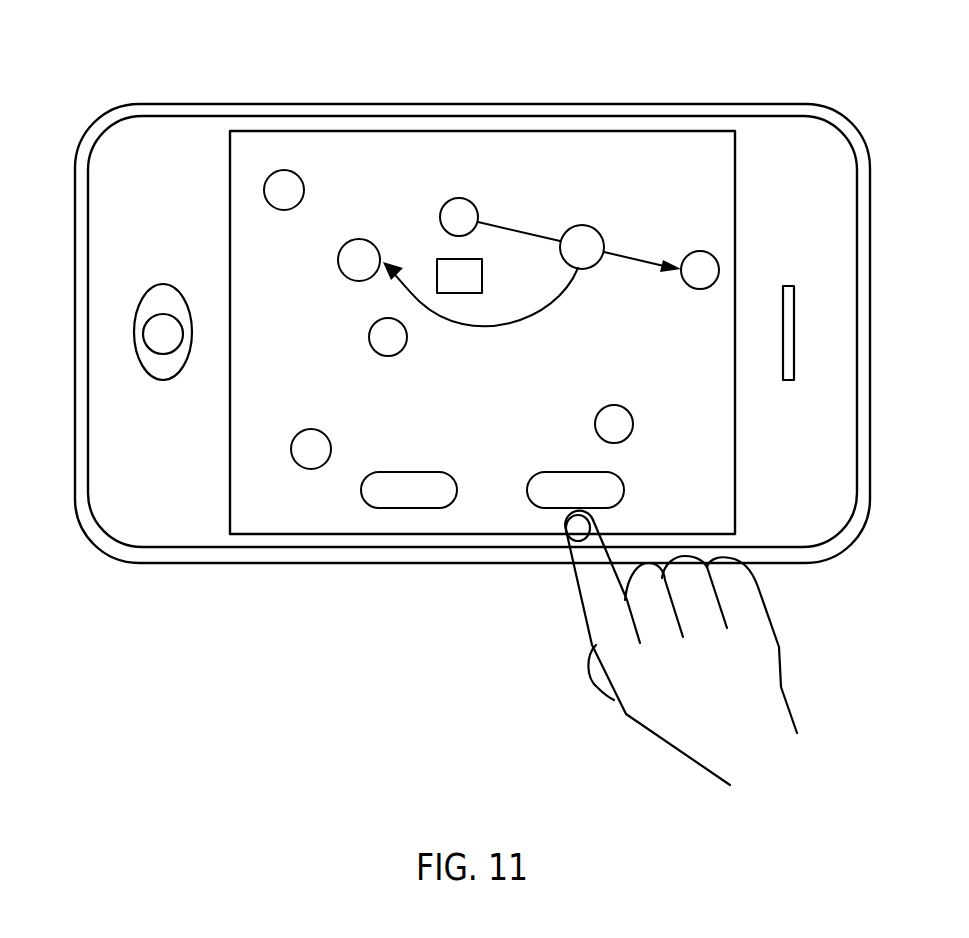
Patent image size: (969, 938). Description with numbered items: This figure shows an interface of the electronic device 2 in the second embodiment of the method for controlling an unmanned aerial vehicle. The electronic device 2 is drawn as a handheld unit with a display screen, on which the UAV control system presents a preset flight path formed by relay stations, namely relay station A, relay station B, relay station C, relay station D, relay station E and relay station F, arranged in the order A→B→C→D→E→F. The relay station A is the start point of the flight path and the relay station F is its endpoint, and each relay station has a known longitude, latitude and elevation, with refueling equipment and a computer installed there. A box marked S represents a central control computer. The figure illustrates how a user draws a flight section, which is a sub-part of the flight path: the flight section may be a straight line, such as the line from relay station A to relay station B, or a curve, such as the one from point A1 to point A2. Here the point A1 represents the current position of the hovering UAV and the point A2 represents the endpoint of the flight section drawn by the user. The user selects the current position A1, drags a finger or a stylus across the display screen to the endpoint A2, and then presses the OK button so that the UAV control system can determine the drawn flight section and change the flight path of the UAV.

The electronic device 2 is at (472, 290).
The relay station A is at (459, 217).
The current position of the UAV A1 is at (582, 247).
The endpoint of the flight section A2 is at (359, 260).
The relay station B is at (700, 270).
The relay station C is at (614, 424).
The relay station D is at (388, 337).
The relay station E is at (311, 449).
The relay station F is at (284, 190).
The central control computer S is at (459, 276).